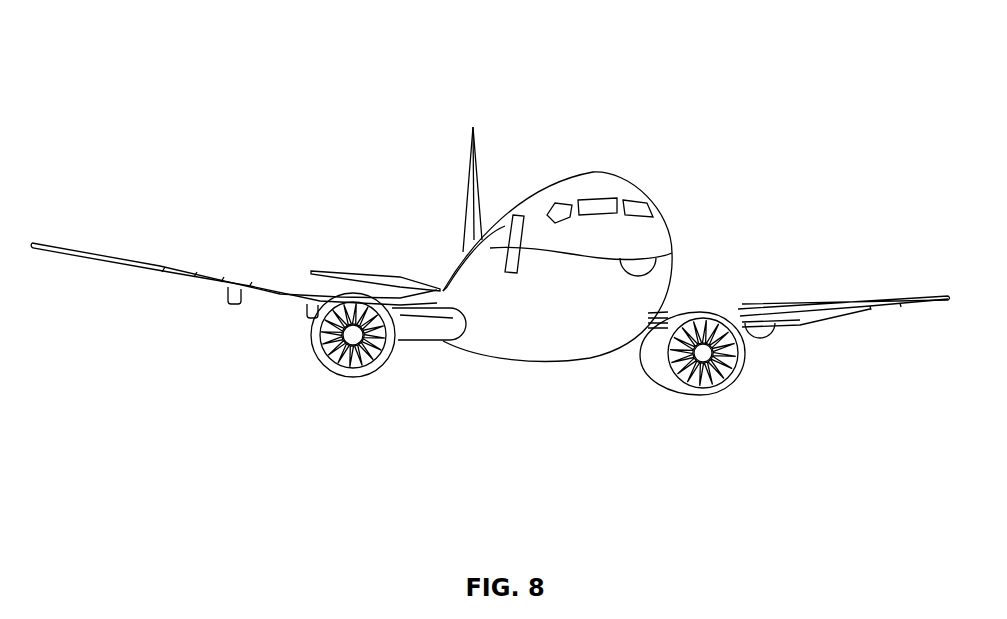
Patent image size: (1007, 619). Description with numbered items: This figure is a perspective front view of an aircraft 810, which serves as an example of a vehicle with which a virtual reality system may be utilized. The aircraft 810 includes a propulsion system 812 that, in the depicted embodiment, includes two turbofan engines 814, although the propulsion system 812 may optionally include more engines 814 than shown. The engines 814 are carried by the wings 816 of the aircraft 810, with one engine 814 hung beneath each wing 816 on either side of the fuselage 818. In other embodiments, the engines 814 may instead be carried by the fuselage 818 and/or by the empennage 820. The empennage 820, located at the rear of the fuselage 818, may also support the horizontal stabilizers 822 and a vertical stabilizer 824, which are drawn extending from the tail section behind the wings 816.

The aircraft 810 is at (262, 84).
The propulsion system 812 is at (776, 387).
The turbofan engines 814 is at (350, 376).
The wings 816 is at (157, 268).
The fuselage 818 is at (673, 224).
The empennage 820 is at (463, 253).
The horizontal stabilizers 822 is at (347, 273).
The vertical stabilizer 824 is at (472, 164).